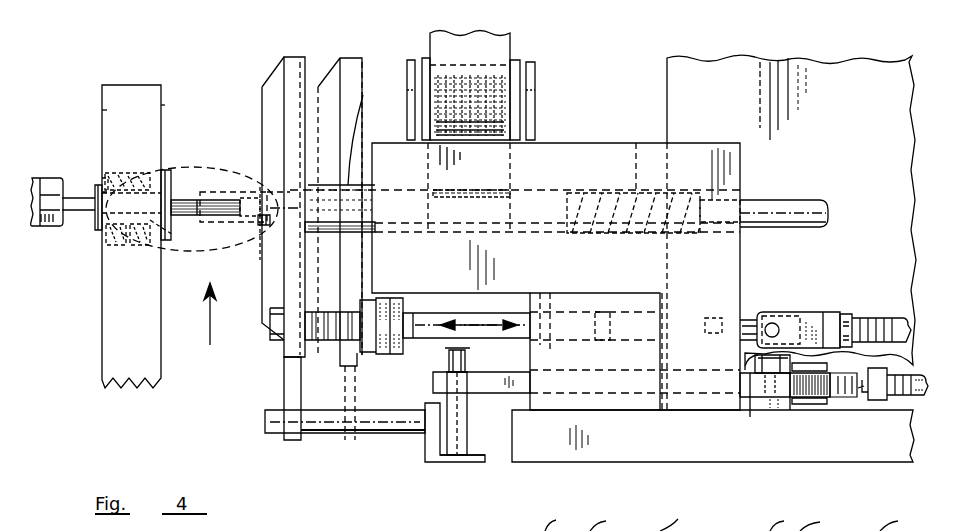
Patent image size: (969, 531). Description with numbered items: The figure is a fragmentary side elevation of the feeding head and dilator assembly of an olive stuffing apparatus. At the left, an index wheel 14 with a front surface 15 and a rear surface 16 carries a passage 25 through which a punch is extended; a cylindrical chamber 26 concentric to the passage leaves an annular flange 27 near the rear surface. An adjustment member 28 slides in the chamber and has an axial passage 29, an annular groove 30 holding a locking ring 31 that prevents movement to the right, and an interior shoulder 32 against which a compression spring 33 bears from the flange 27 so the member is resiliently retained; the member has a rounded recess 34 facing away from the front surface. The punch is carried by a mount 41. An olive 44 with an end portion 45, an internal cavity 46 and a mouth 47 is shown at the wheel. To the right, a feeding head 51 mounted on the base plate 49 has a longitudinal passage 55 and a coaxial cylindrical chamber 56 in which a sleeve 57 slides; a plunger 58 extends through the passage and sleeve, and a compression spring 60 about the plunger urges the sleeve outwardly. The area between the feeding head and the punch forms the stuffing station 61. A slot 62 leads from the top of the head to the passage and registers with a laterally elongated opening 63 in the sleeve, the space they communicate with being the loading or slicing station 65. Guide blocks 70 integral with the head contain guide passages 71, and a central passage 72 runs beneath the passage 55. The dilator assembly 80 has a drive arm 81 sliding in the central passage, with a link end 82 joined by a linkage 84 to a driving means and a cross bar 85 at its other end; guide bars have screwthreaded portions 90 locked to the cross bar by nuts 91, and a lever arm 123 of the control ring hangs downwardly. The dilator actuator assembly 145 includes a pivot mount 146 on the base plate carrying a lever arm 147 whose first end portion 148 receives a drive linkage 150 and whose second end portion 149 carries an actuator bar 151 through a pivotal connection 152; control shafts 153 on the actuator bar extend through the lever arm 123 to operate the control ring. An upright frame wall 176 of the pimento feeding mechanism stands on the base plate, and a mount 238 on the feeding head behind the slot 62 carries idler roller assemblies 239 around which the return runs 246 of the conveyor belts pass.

The index wheel 14 is at (112, 85).
The front surface 15 is at (162, 105).
The rear surface 16 is at (102, 110).
The passage 25 is at (96, 218).
The cylindrical chamber 26 is at (140, 173).
The annular flange 27 is at (117, 246).
The adjustment member 28 is at (171, 232).
The axial passage 29 is at (105, 170).
The annular groove 30 is at (96, 190).
The locking ring 31 is at (106, 232).
The annular interior shoulder 32 is at (172, 234).
The compression spring 33 is at (140, 246).
The rounded recess 34 is at (200, 192).
The mount 41 is at (48, 178).
The olive 44 is at (246, 195).
The end portion 45 is at (164, 180).
The internal cavity 46 is at (236, 198).
The mouth 47 is at (268, 228).
The base plate 49 is at (735, 447).
The feeding head 51 is at (702, 143).
The passage 55 is at (728, 222).
The cylindrical chamber 56 is at (610, 190).
The sleeve 57 is at (368, 140).
The plunger 58 is at (786, 200).
The compression spring 60 is at (636, 190).
The stuffing station 61 is at (209, 330).
The slot 62 is at (492, 165).
The opening 63 is at (408, 192).
The loading or slicing station 65 is at (453, 197).
The guide block 70 is at (582, 293).
The guide passage 71 is at (630, 312).
The central passage 72 is at (714, 318).
The dilator assembly 80 is at (356, 57).
The drive arm 81 is at (673, 312).
The link end 82 is at (770, 312).
The linkage 84 is at (824, 312).
The cross bar 85 is at (400, 355).
The screwthreaded portion 90 is at (318, 345).
The nut 91 is at (368, 354).
The lever arm 123 is at (358, 440).
The dilator actuator assembly 145 is at (849, 402).
The pivot mount 146 is at (780, 400).
The lever arm 147 is at (502, 384).
The first end portion 148 is at (822, 397).
The second end portion 149 is at (475, 368).
The drive linkage 150 is at (882, 400).
The actuator bar 151 is at (440, 462).
The pivotal connection 152 is at (470, 440).
The control shaft 153 is at (385, 433).
The frame wall 176 is at (855, 114).
The mount 238 is at (407, 78).
The idler roller assembly 239 is at (513, 60).
The return run 246 is at (422, 47).